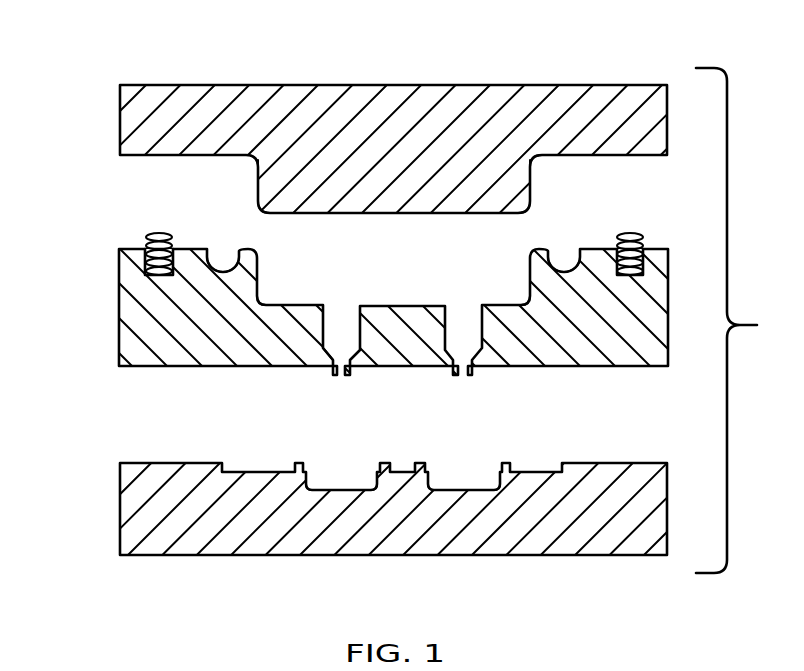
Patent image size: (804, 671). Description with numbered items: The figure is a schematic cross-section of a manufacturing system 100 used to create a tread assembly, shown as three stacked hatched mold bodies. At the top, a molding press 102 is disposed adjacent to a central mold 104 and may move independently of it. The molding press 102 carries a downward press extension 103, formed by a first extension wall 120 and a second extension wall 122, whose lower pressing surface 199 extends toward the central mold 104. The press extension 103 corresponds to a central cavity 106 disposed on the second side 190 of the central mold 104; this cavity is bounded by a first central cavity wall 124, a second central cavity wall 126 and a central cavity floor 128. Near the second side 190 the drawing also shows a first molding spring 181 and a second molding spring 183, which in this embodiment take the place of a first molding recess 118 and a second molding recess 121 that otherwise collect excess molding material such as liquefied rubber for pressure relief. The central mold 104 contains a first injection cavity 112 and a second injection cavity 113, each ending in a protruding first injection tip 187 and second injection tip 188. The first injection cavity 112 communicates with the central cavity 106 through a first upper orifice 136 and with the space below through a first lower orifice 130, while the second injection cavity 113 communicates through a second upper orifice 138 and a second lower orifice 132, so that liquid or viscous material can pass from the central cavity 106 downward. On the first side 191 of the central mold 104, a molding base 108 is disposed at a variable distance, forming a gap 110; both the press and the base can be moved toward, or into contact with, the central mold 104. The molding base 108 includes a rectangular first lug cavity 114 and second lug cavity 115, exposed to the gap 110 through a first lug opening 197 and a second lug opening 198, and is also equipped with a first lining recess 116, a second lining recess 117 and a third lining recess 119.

The manufacturing system 100 is at (242, 72).
The molding press 102 is at (118, 117).
The press extension 103 is at (395, 165).
The central mold 104 is at (119, 298).
The central cavity 106 is at (277, 242).
The molding base 108 is at (118, 508).
The gap 110 is at (120, 416).
The first injection cavity 112 is at (470, 336).
The second injection cavity 113 is at (333, 338).
The first lug cavity 114 is at (475, 466).
The second lug cavity 115 is at (327, 470).
The first lining recess 116 is at (257, 470).
The second lining recess 117 is at (535, 472).
The first molding recess 118 is at (563, 255).
The third lining recess 119 is at (402, 470).
The first extension wall 120 is at (257, 184).
The second molding recess 121 is at (223, 255).
The second extension wall 122 is at (527, 192).
The first central cavity wall 124 is at (260, 286).
The second central cavity wall 126 is at (530, 285).
The central cavity floor 128 is at (395, 305).
The first lower orifice 130 is at (462, 375).
The second lower orifice 132 is at (343, 376).
The first upper orifice 136 is at (462, 313).
The second upper orifice 138 is at (340, 318).
The first molding spring 181 is at (148, 232).
The second molding spring 183 is at (643, 243).
The first injection tip 187 is at (473, 376).
The second injection tip 188 is at (333, 374).
The second side 190 is at (125, 245).
The first side 191 is at (615, 368).
The first lug opening 197 is at (438, 463).
The second lug opening 198 is at (367, 463).
The pressing surface 199 is at (335, 213).